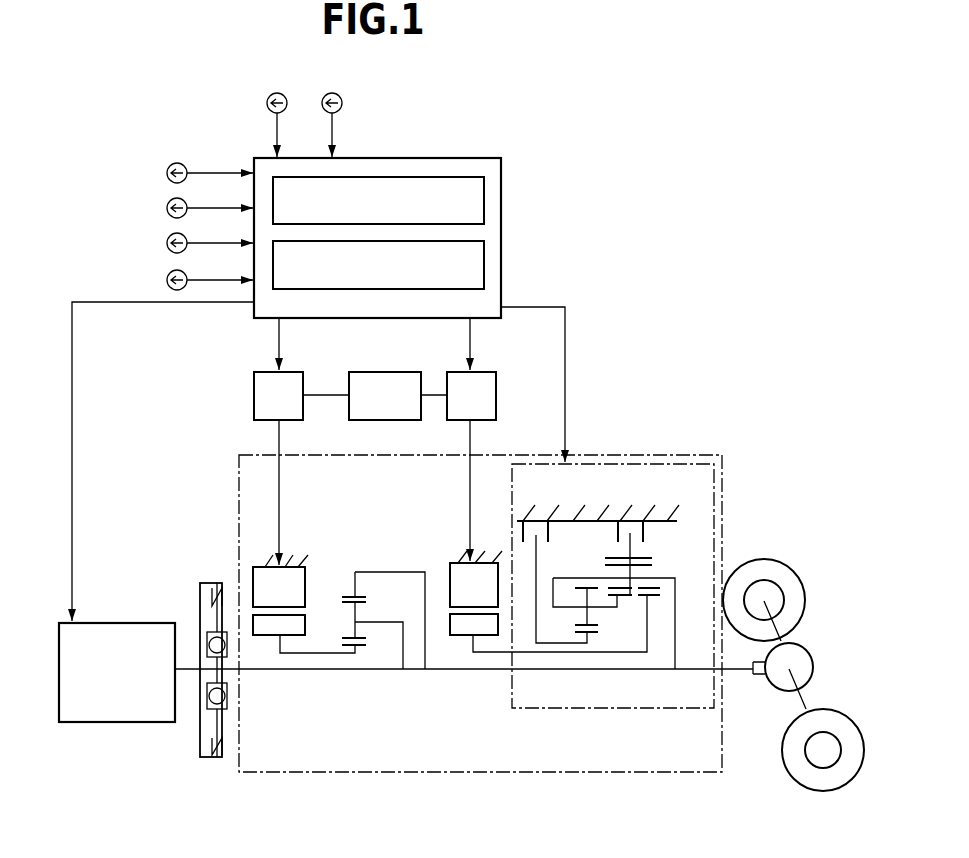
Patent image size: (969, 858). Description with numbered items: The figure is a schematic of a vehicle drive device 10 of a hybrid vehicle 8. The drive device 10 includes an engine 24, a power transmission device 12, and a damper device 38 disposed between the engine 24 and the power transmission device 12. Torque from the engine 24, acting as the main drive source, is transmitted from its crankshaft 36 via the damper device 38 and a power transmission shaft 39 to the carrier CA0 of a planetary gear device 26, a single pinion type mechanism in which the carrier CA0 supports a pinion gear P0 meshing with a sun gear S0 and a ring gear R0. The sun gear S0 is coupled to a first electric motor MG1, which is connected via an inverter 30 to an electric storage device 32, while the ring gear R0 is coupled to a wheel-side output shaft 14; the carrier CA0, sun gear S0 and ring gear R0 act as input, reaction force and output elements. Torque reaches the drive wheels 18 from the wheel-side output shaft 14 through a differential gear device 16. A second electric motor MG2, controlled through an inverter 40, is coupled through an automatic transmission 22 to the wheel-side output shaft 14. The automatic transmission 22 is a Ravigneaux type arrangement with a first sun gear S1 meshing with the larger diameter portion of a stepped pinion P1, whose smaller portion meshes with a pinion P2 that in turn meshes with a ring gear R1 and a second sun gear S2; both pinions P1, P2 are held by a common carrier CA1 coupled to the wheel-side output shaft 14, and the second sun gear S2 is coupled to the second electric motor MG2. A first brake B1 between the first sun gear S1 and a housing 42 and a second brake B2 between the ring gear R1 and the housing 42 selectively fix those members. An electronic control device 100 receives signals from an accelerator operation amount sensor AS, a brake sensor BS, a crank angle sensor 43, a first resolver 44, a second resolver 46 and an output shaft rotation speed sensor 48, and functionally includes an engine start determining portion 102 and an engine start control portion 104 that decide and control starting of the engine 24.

The hybrid vehicle 8 is at (652, 305).
The vehicle drive device 10 is at (637, 392).
The power transmission device 12 is at (383, 774).
The wheel-side output shaft 14 is at (740, 672).
The differential gear device 16 is at (800, 661).
The drive wheels 18 is at (796, 590).
The automatic transmission 22 is at (640, 579).
The engine 24 is at (117, 637).
The planetary gear device 26 is at (352, 649).
The inverter 30 is at (300, 378).
The electric storage device 32 is at (375, 378).
The crankshaft 36 is at (190, 671).
The damper device 38 is at (199, 577).
The power transmission shaft 39 is at (258, 671).
The inverter 40 is at (479, 378).
The housing 42 is at (594, 520).
The crank angle sensor 43 is at (167, 173).
The first resolver 44 is at (167, 208).
The second resolver 46 is at (167, 243).
The output shaft rotation speed sensor 48 is at (167, 280).
The electronic control device 100 is at (447, 158).
The engine start determining portion 102 is at (478, 203).
The engine start control portion 104 is at (478, 264).
The first electric motor MG1 is at (280, 595).
The second electric motor MG2 is at (476, 593).
The accelerator operation amount sensor AS is at (267, 103).
The brake sensor BS is at (322, 103).
The ring gear R0 is at (346, 595).
The pinion gear P0 is at (345, 637).
The sun gear S0 is at (360, 650).
The carrier CA0 is at (376, 622).
The first brake B1 is at (533, 530).
The second brake B2 is at (640, 530).
The first sun gear S1 is at (578, 640).
The second sun gear S2 is at (652, 598).
The stepped pinion P1 is at (598, 628).
The pinion P2 is at (660, 588).
The ring gear R1 is at (654, 561).
The carrier CA1 is at (553, 590).